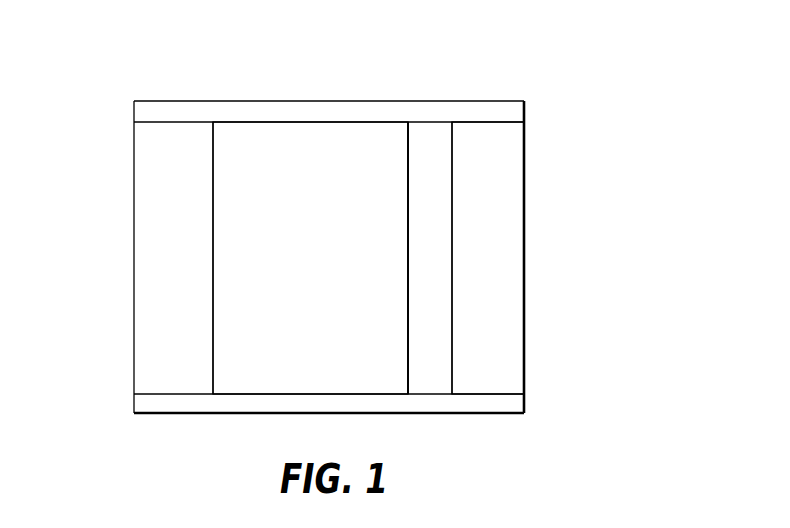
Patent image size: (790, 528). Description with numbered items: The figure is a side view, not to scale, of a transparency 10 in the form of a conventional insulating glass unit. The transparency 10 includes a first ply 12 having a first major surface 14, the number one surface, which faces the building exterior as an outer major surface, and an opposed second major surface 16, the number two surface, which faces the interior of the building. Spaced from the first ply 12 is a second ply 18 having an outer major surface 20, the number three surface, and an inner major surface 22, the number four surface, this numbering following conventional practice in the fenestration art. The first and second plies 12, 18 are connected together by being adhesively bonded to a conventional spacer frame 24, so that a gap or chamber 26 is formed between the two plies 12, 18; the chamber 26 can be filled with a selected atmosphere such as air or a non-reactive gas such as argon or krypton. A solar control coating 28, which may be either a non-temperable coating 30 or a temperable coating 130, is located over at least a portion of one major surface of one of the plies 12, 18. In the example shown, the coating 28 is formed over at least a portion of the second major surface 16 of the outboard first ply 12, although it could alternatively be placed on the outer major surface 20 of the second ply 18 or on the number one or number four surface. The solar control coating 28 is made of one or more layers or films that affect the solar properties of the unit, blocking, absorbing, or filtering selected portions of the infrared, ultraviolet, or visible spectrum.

The transparency 10 is at (546, 57).
The first ply 12 is at (487, 382).
The first major surface 14 is at (538, 348).
The second major surface 16 is at (441, 364).
The second ply 18 is at (176, 133).
The outer major surface 20 is at (226, 157).
The inner major surface 22 is at (122, 197).
The spacer frame 24 is at (162, 404).
The chamber 26 is at (326, 261).
The solar control coating 28 is at (395, 226).
The non-temperable coating 30 is at (430, 134).
The temperable coating 130 is at (461, 231).